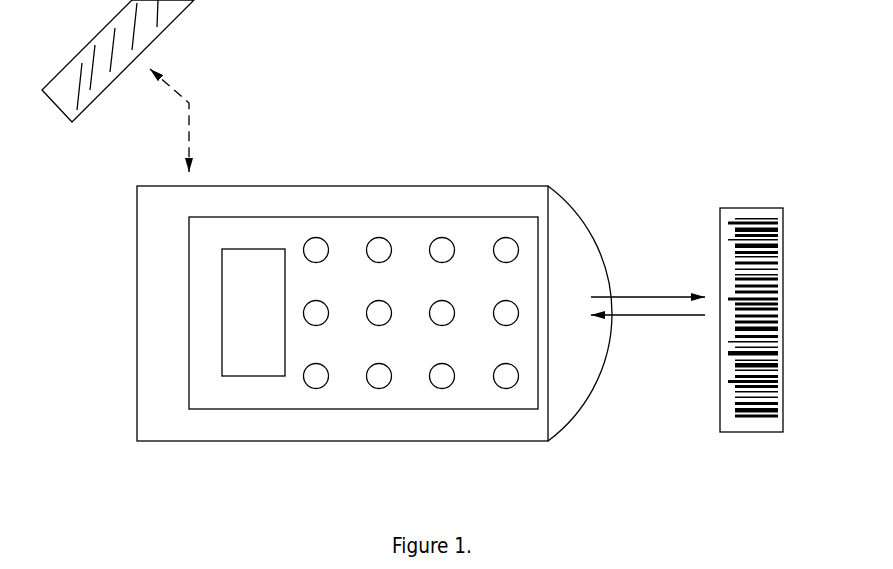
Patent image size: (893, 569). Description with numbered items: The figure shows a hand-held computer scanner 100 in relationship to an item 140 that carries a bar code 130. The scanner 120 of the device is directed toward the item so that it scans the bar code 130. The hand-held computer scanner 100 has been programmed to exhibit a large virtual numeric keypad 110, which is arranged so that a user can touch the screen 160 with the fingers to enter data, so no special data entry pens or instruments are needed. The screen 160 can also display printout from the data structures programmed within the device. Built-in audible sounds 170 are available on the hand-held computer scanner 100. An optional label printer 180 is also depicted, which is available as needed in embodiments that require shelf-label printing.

The hand-held computer scanner 100 is at (300, 445).
The virtual numeric keypad 110 is at (473, 383).
The scanner 120 is at (648, 392).
The bar code 130 is at (753, 433).
The item 140 is at (766, 182).
The screen 160 is at (503, 227).
The audible sounds 170 is at (548, 186).
The label printer 180 is at (153, 27).